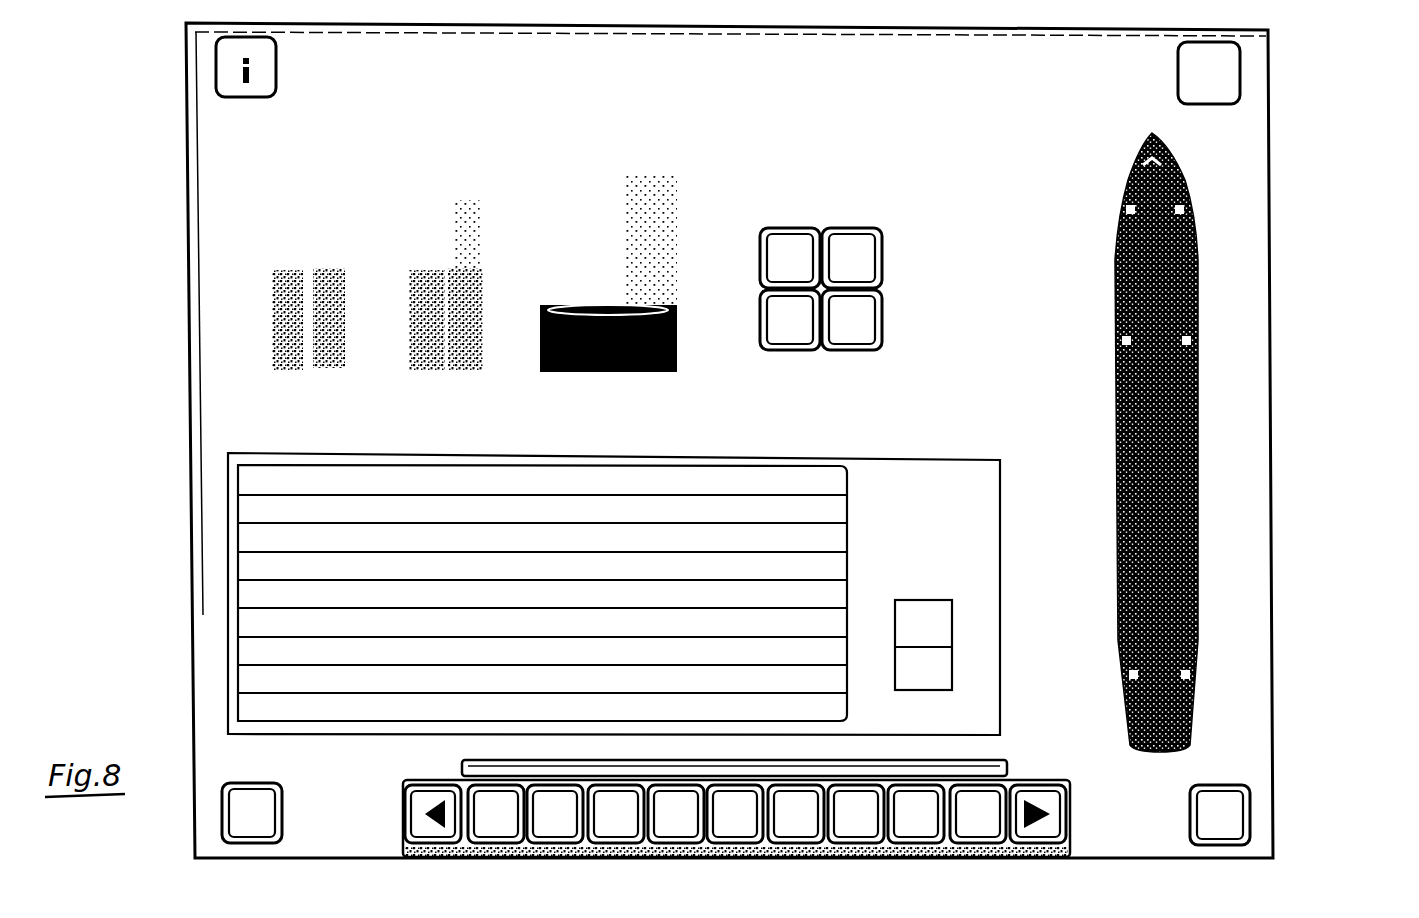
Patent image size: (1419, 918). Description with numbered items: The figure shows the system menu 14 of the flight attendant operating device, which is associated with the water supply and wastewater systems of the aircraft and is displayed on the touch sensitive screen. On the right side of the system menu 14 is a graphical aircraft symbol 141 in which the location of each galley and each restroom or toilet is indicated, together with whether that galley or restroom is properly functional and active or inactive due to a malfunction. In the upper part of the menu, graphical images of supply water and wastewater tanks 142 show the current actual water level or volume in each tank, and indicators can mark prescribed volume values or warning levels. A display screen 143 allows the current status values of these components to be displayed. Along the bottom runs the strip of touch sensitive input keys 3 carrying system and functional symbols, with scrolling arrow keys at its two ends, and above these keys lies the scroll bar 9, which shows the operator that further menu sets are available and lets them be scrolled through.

The system menu 14 is at (1243, 201).
The graphical aircraft symbol 141 is at (1199, 502).
The supply water and wastewater tanks 142 is at (474, 311).
The display screen 143 is at (370, 503).
The touch sensitive input keys 3 is at (625, 830).
The scroll bar 9 is at (718, 762).